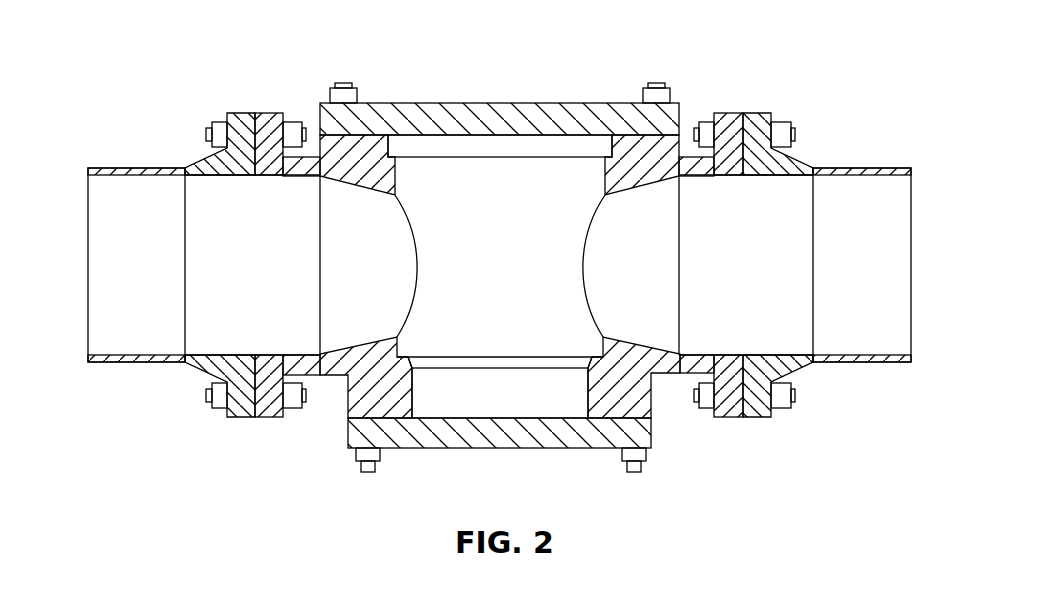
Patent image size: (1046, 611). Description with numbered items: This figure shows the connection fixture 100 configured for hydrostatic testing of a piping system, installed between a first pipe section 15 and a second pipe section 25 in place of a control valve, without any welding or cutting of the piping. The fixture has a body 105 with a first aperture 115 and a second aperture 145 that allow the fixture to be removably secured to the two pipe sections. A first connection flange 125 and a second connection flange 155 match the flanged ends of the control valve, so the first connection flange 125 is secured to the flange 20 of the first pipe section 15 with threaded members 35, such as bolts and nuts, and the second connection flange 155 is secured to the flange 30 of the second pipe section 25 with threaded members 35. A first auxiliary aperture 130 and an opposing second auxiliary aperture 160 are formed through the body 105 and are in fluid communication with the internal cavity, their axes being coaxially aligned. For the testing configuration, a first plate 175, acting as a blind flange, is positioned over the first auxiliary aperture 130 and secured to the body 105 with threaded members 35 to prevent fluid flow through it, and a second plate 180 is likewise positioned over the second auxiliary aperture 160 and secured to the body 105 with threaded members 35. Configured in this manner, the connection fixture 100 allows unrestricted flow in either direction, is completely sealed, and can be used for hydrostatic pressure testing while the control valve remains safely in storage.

The first pipe section 15 is at (132, 172).
The flange 20 is at (243, 130).
The second pipe section 25 is at (872, 168).
The flange 30 is at (758, 127).
The threaded members 35 is at (343, 82).
The connection fixture 100 is at (326, 404).
The body 105 is at (666, 366).
The first aperture 115 is at (297, 177).
The first connection flange 125 is at (272, 122).
The first auxiliary aperture 130 is at (590, 386).
The second aperture 145 is at (725, 177).
The second connection flange 155 is at (728, 122).
The second auxiliary aperture 160 is at (606, 148).
The first plate 175 is at (487, 436).
The second plate 180 is at (498, 117).